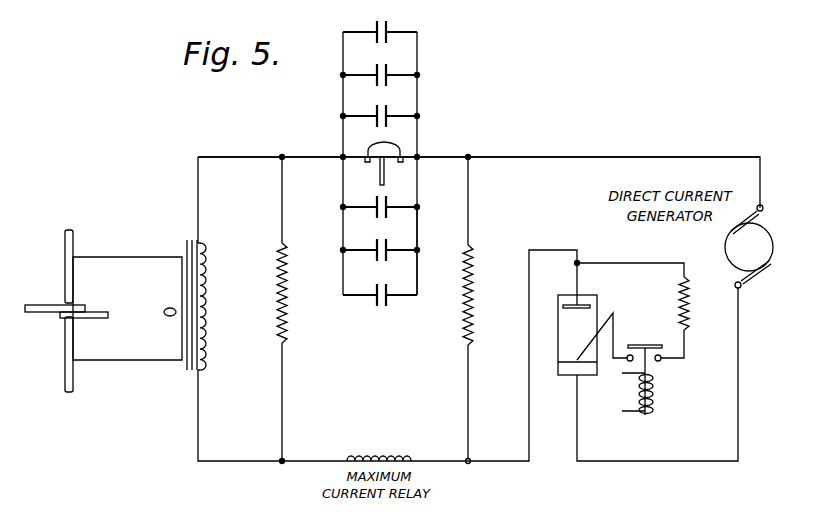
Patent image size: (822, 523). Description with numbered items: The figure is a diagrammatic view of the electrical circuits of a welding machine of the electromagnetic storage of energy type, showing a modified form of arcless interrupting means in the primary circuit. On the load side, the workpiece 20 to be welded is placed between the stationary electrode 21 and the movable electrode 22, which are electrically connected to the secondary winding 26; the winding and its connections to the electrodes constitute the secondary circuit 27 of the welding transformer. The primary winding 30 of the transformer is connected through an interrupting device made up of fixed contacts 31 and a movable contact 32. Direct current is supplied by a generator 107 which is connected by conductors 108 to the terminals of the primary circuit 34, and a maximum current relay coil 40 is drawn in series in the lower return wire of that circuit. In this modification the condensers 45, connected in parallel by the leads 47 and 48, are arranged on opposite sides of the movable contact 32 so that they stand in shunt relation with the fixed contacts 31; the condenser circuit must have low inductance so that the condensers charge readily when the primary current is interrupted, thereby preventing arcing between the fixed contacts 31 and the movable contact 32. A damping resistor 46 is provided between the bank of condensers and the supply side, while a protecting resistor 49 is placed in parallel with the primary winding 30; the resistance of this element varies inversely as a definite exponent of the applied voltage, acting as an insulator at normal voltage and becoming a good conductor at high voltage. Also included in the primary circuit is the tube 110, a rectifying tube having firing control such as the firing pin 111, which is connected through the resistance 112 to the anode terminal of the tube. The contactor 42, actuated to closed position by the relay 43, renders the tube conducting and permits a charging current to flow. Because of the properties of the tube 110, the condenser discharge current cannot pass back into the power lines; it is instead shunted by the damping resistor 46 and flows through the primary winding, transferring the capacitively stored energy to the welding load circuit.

The workpiece 20 is at (43, 313).
The stationary electrode 21 is at (65, 381).
The movable electrode 22 is at (65, 250).
The secondary winding 26 is at (165, 312).
The secondary circuit 27 is at (135, 255).
The primary winding 30 is at (213, 278).
The fixed contacts 31 is at (365, 157).
The movable contact 32 is at (390, 147).
The primary circuit 34 is at (638, 157).
The maximum current relay coil 40 is at (377, 450).
The contactor 42 is at (645, 345).
The igniting relay 43 is at (657, 395).
The condensers 45 is at (375, 108).
The damping resistor 46 is at (465, 318).
The lead 47 is at (343, 275).
The lead 48 is at (419, 237).
The protecting resistor 49 is at (280, 328).
The generator 107 is at (762, 245).
The conductors 108 is at (762, 203).
The tube 110 is at (558, 341).
The firing pin 111 is at (609, 313).
The resistance 112 is at (692, 303).